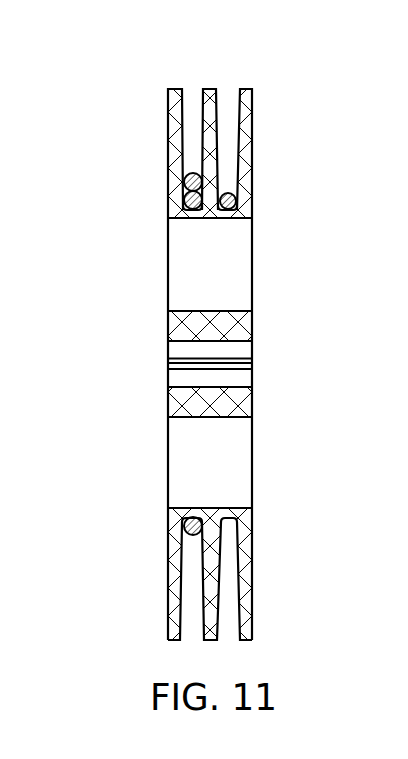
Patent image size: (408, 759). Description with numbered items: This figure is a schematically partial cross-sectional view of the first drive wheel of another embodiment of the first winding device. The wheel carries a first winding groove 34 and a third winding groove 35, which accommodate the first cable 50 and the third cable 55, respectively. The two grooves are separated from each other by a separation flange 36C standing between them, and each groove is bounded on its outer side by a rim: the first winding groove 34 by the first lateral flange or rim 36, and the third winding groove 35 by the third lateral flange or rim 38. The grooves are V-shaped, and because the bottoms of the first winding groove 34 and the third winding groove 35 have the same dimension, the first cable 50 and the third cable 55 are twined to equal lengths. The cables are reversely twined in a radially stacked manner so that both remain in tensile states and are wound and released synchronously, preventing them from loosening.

The first winding groove 34 is at (192, 105).
The third winding groove 35 is at (226, 107).
The first lateral flange or rim 36 is at (168, 105).
The separation flange 36C is at (208, 88).
The third lateral flange or rim 38 is at (248, 120).
The first cable 50 is at (188, 183).
The third cable 55 is at (232, 190).